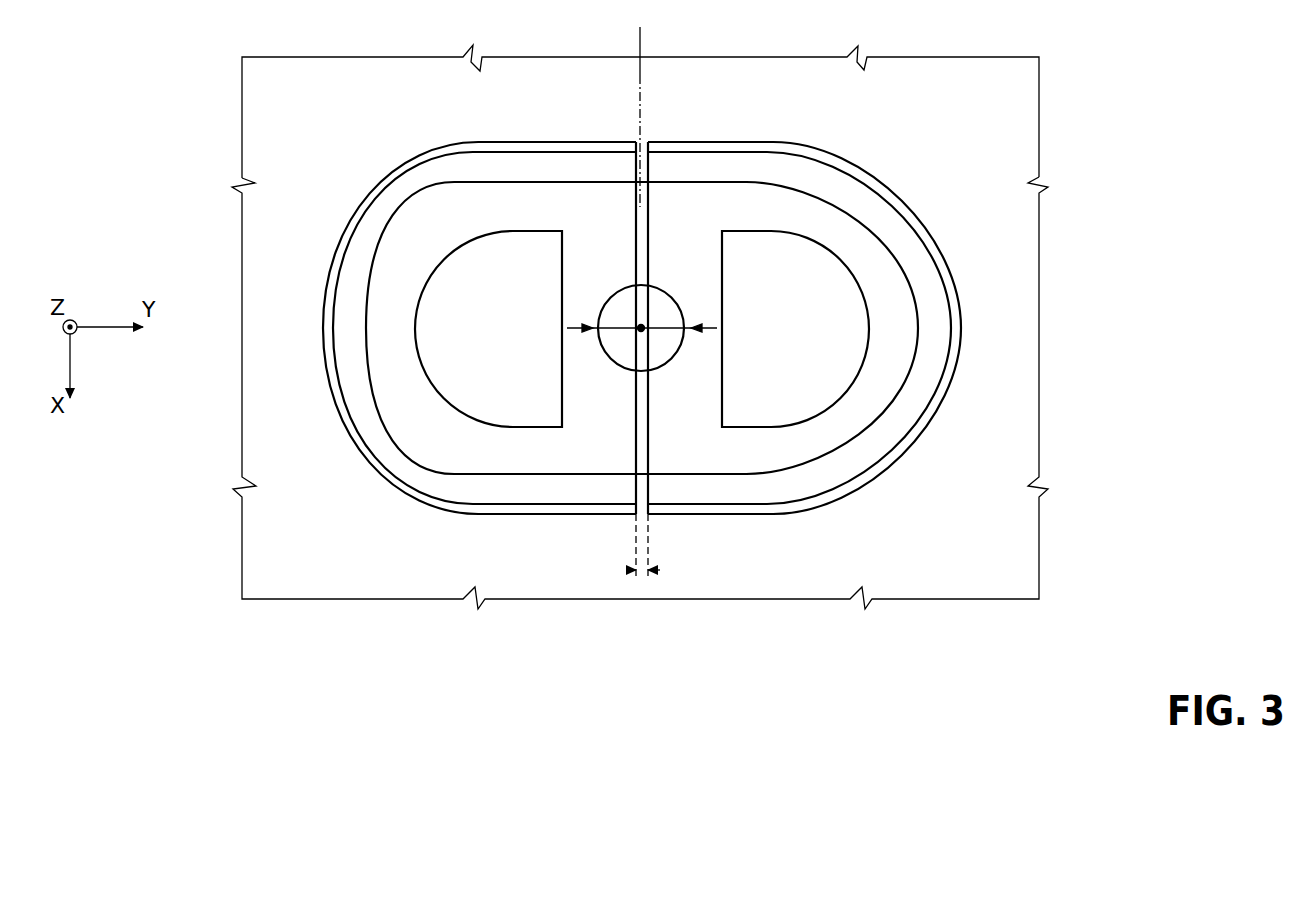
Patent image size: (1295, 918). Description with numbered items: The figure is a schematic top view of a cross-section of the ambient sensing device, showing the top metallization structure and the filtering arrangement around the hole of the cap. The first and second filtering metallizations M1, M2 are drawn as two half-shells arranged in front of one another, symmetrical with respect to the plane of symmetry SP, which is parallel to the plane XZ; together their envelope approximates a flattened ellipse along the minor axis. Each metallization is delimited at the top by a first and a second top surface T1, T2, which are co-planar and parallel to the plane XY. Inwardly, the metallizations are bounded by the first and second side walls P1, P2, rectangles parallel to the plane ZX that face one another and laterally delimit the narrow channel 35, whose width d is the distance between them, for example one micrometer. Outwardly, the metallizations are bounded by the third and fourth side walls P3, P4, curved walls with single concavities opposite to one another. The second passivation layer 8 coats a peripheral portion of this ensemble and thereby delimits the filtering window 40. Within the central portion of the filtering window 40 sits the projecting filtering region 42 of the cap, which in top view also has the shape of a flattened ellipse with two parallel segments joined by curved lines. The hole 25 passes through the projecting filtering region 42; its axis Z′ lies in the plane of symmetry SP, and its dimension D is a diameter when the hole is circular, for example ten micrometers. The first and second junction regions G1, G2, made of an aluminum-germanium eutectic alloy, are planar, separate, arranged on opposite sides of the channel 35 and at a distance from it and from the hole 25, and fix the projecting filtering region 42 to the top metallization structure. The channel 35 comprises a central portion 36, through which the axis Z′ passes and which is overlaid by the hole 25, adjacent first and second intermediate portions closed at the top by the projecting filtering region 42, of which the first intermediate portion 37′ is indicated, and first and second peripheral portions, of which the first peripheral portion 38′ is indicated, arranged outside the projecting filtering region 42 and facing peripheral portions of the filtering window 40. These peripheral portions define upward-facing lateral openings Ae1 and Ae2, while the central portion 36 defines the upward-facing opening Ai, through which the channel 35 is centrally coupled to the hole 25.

The second passivation layer 8 is at (1040, 90).
The first top surface T1 is at (430, 190).
The second top surface T2 is at (834, 176).
The first filtering metallization M1 is at (471, 146).
The second filtering metallization M2 is at (897, 198).
The first side wall P1 is at (622, 170).
The second side wall P2 is at (657, 170).
The third side wall P3 is at (363, 203).
The fourth side wall P4 is at (943, 233).
The filtering window 40 is at (783, 166).
The projecting filtering region 42 is at (433, 432).
The first junction region G1 is at (513, 341).
The second junction region G2 is at (800, 341).
The hole 25 is at (615, 312).
The axis of the hole Z′ is at (643, 326).
The dimension of the hole D is at (670, 335).
The channel 35 is at (648, 338).
The central portion 36 is at (640, 358).
The first intermediate portion 37′ is at (640, 403).
The first peripheral portion 38′ is at (648, 490).
The plane of symmetry SP is at (638, 43).
The first lateral opening Ae1 is at (635, 482).
The second lateral opening Ae2 is at (631, 158).
The central opening Ai is at (634, 343).
The width of the channel d is at (637, 545).